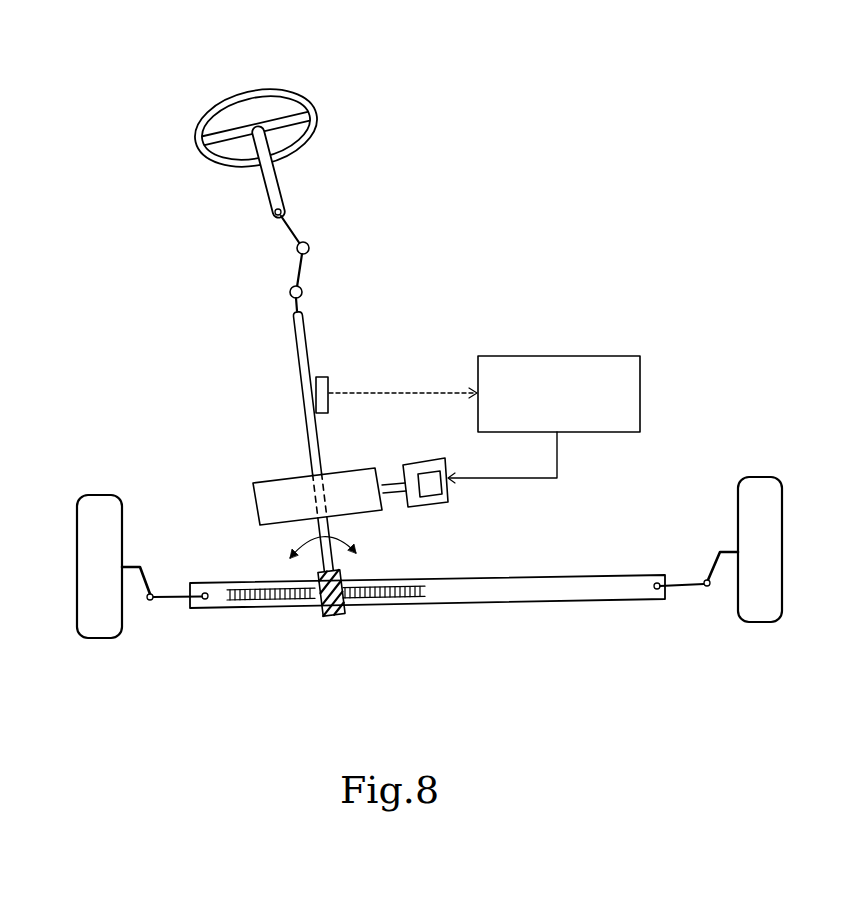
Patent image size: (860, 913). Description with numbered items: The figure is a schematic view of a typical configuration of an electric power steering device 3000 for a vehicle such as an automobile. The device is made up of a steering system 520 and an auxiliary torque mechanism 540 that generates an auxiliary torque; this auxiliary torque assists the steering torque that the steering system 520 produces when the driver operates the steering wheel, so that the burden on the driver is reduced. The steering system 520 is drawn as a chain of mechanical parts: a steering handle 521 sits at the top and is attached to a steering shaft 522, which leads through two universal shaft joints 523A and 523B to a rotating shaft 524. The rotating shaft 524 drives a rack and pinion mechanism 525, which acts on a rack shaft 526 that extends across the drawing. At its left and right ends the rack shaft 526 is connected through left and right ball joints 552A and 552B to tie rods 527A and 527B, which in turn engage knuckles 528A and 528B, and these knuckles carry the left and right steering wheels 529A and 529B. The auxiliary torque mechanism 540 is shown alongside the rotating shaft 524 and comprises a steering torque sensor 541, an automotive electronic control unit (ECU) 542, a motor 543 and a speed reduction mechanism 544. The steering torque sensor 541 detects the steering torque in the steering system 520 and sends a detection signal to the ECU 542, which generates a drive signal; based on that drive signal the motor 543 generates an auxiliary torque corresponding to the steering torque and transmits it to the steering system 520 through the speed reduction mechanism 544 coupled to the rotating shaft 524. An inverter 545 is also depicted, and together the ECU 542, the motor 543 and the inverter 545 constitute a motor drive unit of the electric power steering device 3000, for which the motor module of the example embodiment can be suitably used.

The electric power steering device 3000 is at (467, 101).
The steering system 520 is at (266, 317).
The steering handle 521 is at (208, 110).
The steering shaft 522 is at (281, 179).
The universal shaft joint 523A is at (309, 246).
The universal shaft joint 523B is at (302, 292).
The rotating shaft 524 is at (305, 338).
The rack and pinion mechanism 525 is at (338, 622).
The rack shaft 526 is at (468, 601).
The tie rod 527A is at (165, 595).
The tie rod 527B is at (700, 584).
The knuckle 528A is at (130, 565).
The knuckle 528B is at (720, 552).
The steering wheel 529A is at (104, 626).
The steering wheel 529B is at (753, 618).
The auxiliary torque mechanism 540 is at (501, 324).
The steering torque sensor 541 is at (328, 378).
The automotive electronic control unit (ECU) 542 is at (606, 358).
The motor 543 is at (420, 463).
The speed reduction mechanism 544 is at (260, 484).
The inverter 545 is at (431, 490).
The ball joint 552A is at (204, 599).
The ball joint 552B is at (656, 589).